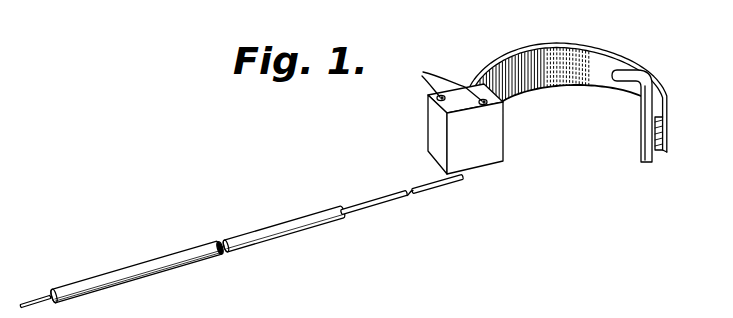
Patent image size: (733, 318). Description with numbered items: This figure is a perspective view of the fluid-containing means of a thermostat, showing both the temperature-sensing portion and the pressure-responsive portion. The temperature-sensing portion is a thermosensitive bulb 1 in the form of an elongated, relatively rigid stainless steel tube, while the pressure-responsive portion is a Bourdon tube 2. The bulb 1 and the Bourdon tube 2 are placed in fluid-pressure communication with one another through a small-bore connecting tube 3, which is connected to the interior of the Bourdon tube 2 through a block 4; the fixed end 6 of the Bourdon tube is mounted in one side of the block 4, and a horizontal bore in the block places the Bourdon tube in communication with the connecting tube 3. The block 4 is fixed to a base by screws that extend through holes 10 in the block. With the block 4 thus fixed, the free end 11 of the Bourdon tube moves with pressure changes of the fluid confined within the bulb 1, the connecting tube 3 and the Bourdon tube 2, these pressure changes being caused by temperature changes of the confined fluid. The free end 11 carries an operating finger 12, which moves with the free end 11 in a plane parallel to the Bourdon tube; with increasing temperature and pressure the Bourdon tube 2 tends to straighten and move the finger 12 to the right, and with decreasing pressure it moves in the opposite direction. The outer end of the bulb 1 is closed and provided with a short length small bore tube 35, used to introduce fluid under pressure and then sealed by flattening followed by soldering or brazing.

The thermosensitive bulb 1 is at (174, 268).
The Bourdon tube 2 is at (582, 46).
The small-bore connecting tube 3 is at (407, 194).
The block 4 is at (486, 165).
The fixed end of the Bourdon tube 6 is at (461, 85).
The holes 10 is at (422, 76).
The free end of the Bourdon tube 11 is at (664, 147).
The operating finger 12 is at (617, 82).
The short length small bore tube 35 is at (39, 298).